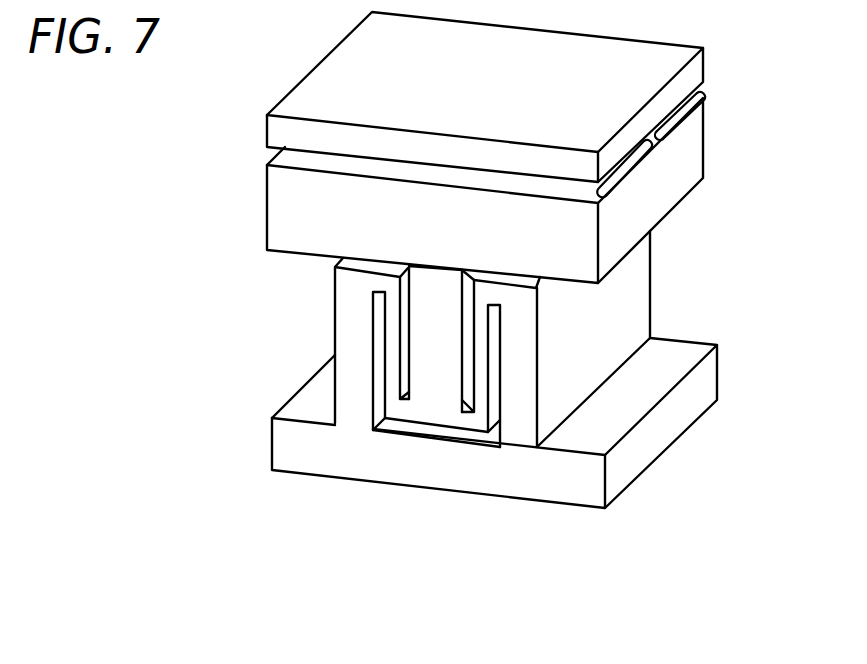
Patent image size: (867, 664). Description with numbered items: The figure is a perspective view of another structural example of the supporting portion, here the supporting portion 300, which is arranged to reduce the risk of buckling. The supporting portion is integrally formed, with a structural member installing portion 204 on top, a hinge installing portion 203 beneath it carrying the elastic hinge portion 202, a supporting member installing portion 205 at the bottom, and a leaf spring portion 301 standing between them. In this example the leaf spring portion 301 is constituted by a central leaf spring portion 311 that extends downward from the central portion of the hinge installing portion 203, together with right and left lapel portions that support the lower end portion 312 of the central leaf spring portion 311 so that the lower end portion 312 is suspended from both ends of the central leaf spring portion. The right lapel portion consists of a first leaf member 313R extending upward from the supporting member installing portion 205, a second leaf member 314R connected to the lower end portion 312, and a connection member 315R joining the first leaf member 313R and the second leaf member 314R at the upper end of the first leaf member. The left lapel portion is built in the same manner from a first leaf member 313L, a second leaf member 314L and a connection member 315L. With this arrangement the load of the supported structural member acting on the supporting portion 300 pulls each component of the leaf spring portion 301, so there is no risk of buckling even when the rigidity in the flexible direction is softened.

The supporting portion 300 is at (289, 88).
The elastic hinge portion 202 is at (656, 138).
The hinge installing portion 203 is at (692, 173).
The structural member installing portion 204 is at (652, 53).
The supporting member installing portion 205 is at (688, 407).
The leaf spring portion 301 is at (678, 605).
The central leaf spring portion 311 is at (444, 390).
The lower end portion 312 is at (432, 418).
The first leaf member 313L is at (350, 370).
The first leaf member 313R is at (525, 403).
The second leaf member 314L is at (392, 378).
The second leaf member 314R is at (481, 390).
The connection member 315L is at (353, 280).
The connection member 315R is at (508, 302).